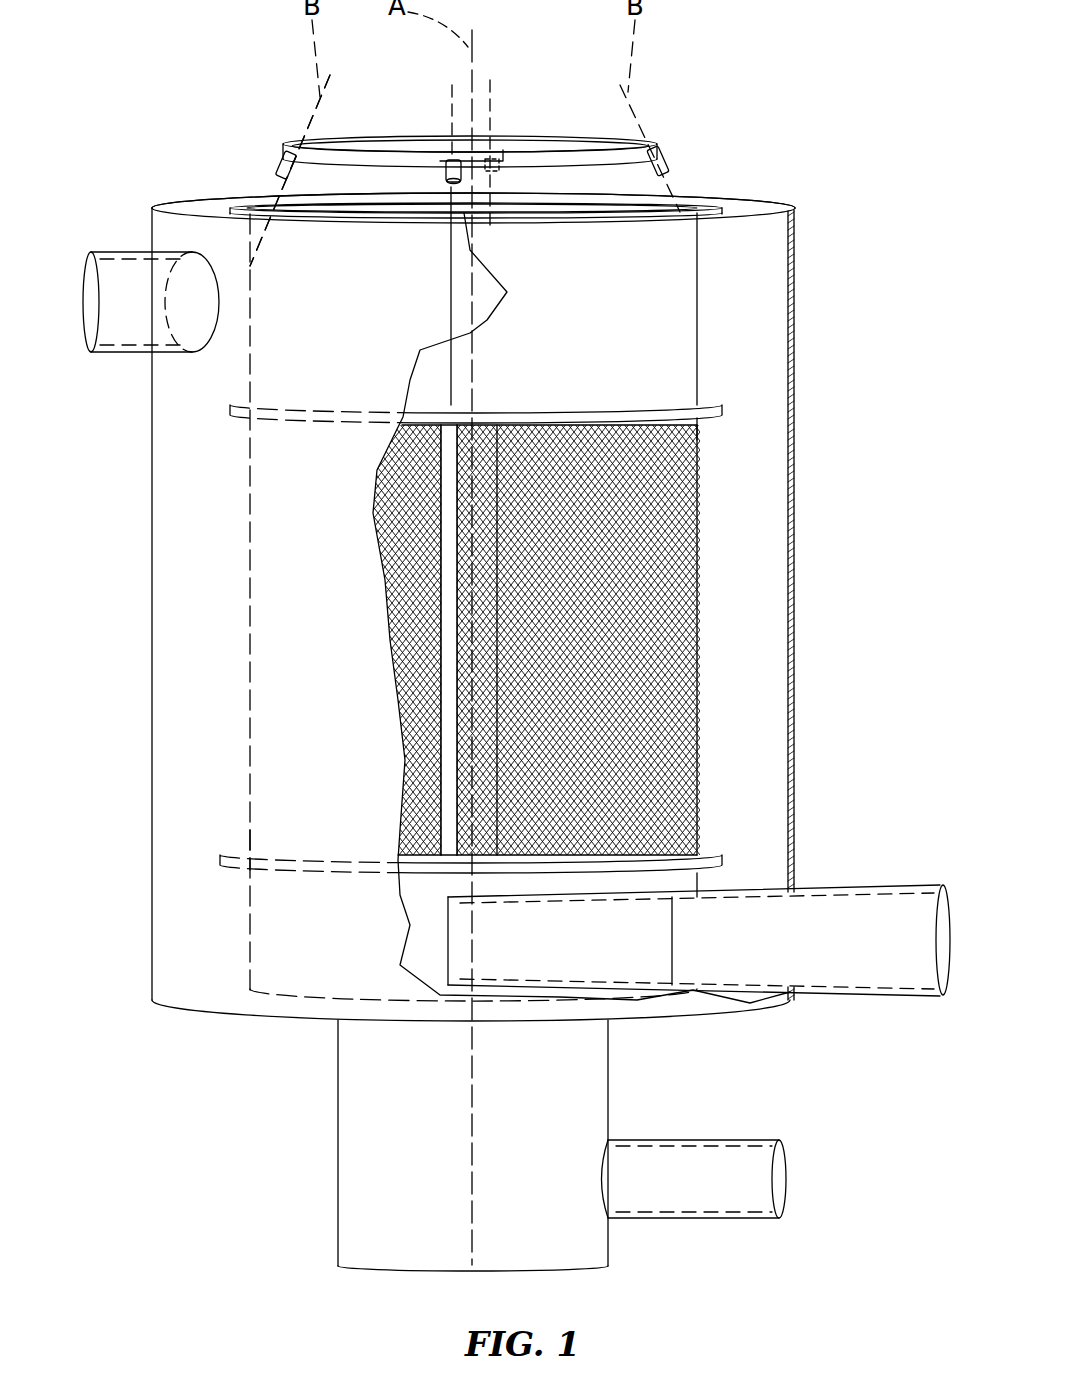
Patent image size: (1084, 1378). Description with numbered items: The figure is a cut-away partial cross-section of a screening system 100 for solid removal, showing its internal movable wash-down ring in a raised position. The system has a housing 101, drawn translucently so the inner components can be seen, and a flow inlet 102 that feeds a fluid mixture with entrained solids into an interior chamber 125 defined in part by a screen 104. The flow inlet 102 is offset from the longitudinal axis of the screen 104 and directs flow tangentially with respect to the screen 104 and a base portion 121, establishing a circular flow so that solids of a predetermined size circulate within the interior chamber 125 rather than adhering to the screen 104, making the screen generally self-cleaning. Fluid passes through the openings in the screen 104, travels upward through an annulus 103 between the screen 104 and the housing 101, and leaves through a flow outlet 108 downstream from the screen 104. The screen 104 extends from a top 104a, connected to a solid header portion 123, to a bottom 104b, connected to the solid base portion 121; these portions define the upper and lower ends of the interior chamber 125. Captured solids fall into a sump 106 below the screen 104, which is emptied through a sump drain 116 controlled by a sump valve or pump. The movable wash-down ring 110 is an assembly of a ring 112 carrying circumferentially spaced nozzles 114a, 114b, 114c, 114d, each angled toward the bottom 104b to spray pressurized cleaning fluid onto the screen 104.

The screening system 100 is at (846, 118).
The housing 101 is at (793, 273).
The flow inlet 102 is at (800, 892).
The annulus 103 is at (190, 200).
The screen 104 is at (697, 640).
The top of screen 104a is at (700, 428).
The bottom of screen 104b is at (263, 838).
The sump 106 is at (333, 1117).
The flow outlet 108 is at (190, 348).
The wash-down ring 110 is at (324, 124).
The ring 112 is at (364, 143).
The nozzle 114a is at (668, 157).
The nozzle 114b is at (440, 161).
The nozzle 114c is at (282, 160).
The nozzle 114d is at (506, 150).
The sump drain 116 is at (728, 1162).
The base portion 121 is at (425, 938).
The header portion 123 is at (697, 258).
The interior chamber 125 is at (648, 687).